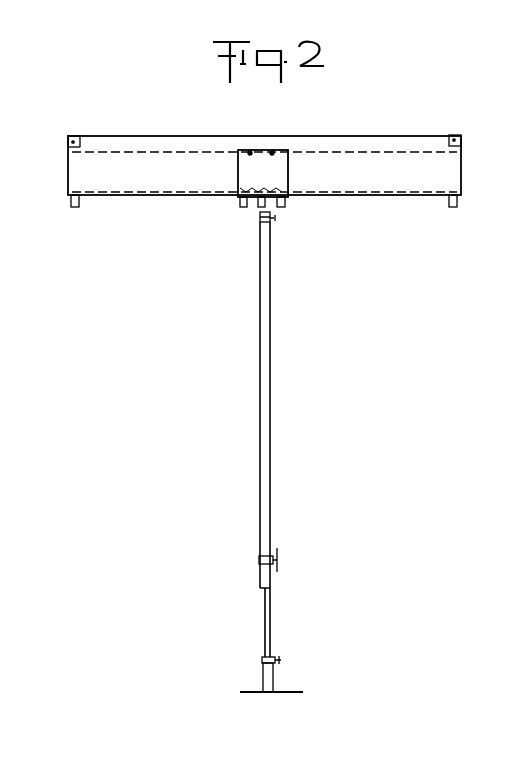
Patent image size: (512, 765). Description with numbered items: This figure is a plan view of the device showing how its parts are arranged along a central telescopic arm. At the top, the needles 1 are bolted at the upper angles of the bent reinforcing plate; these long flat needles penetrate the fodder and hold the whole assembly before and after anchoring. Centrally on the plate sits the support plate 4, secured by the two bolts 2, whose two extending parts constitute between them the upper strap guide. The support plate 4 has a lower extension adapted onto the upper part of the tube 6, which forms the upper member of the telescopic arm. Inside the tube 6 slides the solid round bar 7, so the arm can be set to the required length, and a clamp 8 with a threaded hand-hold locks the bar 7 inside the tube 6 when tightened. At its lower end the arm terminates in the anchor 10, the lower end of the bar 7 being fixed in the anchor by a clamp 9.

The needles 1 is at (73, 141).
The bolts 2 is at (272, 152).
The support plate 4 is at (245, 168).
The tube 6 is at (270, 342).
The solid round bar 7 is at (272, 620).
The clamp 8 is at (279, 560).
The clamp 9 is at (261, 661).
The anchor 10 is at (275, 681).